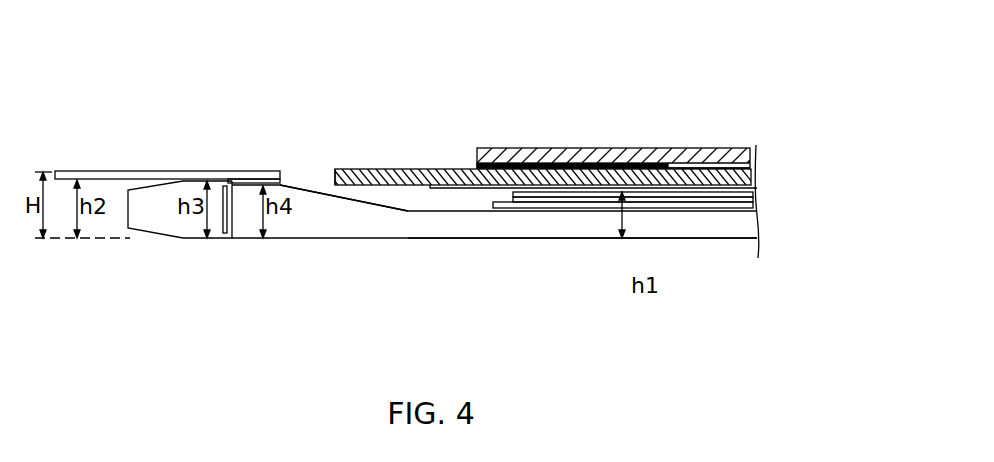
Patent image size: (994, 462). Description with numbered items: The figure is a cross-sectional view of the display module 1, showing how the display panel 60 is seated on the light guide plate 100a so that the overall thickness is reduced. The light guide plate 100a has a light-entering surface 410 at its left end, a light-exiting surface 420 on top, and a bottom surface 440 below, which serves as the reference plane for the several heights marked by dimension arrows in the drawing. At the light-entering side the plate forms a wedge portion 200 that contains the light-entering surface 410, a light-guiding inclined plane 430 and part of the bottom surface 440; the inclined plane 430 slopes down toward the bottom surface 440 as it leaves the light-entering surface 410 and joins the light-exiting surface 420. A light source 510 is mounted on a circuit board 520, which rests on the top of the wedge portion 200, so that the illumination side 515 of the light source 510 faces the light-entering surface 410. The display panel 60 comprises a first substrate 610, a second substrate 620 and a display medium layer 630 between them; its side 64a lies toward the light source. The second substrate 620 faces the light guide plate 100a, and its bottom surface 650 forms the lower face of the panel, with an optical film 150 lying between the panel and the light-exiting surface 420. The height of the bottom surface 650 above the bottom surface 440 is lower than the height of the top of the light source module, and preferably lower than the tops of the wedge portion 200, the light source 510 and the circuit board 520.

The display module 1 is at (113, 36).
The circuit board 520 is at (110, 176).
The illumination side 515 is at (232, 183).
The light source 510 is at (128, 217).
The light-entering surface 410 is at (231, 238).
The wedge portion 200 is at (297, 187).
The light-guiding inclined plane 430 is at (363, 202).
The bottom surface 440 is at (568, 238).
The light guide plate 100a is at (715, 225).
The display panel 60 is at (355, 169).
The side of display panel 64a is at (333, 172).
The bottom surface of second substrate 650 is at (430, 186).
The first substrate 610 is at (718, 157).
The display medium layer 630 is at (678, 167).
The second substrate 620 is at (750, 177).
The optical film 150 is at (760, 190).
The light-exiting surface 420 is at (513, 208).